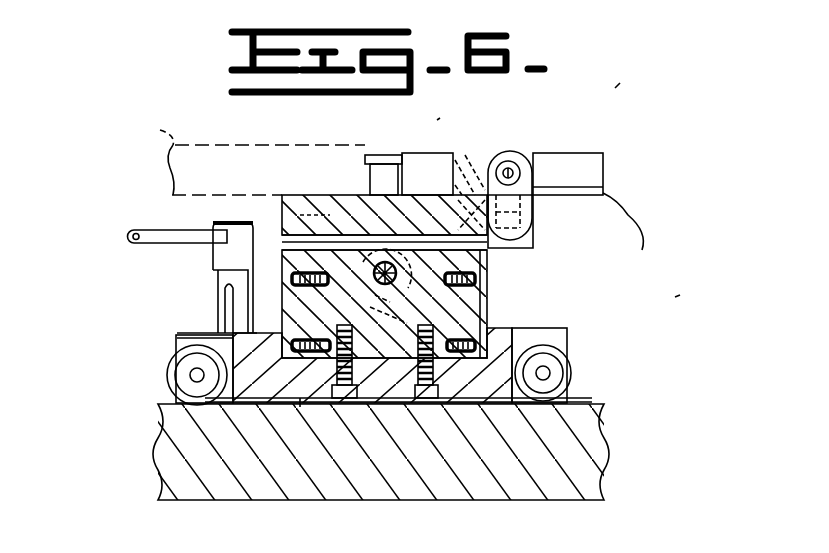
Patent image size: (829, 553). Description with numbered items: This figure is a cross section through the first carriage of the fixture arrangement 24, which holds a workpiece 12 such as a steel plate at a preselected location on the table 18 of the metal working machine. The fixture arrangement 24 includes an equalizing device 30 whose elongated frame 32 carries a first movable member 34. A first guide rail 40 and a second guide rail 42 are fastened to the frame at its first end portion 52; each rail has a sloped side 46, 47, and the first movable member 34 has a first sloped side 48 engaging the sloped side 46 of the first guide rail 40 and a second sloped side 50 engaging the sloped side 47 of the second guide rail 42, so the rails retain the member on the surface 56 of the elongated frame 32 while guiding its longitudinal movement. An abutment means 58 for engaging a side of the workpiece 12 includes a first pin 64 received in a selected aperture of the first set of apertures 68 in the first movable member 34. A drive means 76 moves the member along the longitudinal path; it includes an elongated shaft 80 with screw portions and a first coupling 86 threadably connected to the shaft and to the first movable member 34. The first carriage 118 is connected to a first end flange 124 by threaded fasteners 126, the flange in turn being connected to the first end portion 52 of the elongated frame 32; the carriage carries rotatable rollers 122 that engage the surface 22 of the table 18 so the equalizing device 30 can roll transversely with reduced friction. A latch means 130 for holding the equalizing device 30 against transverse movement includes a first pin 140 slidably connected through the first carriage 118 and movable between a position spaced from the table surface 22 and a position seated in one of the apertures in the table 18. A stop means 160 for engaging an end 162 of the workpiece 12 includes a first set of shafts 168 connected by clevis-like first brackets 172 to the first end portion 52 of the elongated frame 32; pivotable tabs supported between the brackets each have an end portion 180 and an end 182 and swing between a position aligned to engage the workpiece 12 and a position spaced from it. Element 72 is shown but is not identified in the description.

The workpiece 12 is at (160, 130).
The table 18 is at (604, 460).
The surface 22 is at (578, 400).
The fixture arrangement 24 is at (622, 82).
The equalizing device 30 is at (688, 292).
The elongated frame 32 is at (490, 320).
The first movable member 34 is at (490, 274).
The first guide rail 40 is at (300, 200).
The second guide rail 42 is at (445, 238).
The sloped side 46 is at (350, 235).
The sloped side 47 is at (420, 285).
The first sloped side 48 is at (282, 200).
The second sloped side 50 is at (515, 163).
The first end portion 52 is at (490, 310).
The surface 56 is at (365, 235).
The abutment means 58 is at (447, 112).
The first pin 64 is at (386, 155).
The first set of apertures 68 is at (293, 278).
The wear plate 72 is at (345, 225).
The drive means 76 is at (375, 278).
The elongated shaft 80 is at (380, 277).
The first coupling 86 is at (404, 325).
The first carriage 118 is at (226, 404).
The rollers 122 is at (165, 374).
The first end flange 124 is at (490, 295).
The threaded fasteners 126 is at (360, 408).
The latch means 130 is at (142, 264).
The first pin 140 is at (222, 292).
The stop means 160 is at (614, 158).
The workpiece end 162 is at (470, 112).
The first set of shafts 168 is at (522, 170).
The first brackets 172 is at (537, 235).
The end portion 180 is at (605, 188).
The end 182 is at (452, 195).